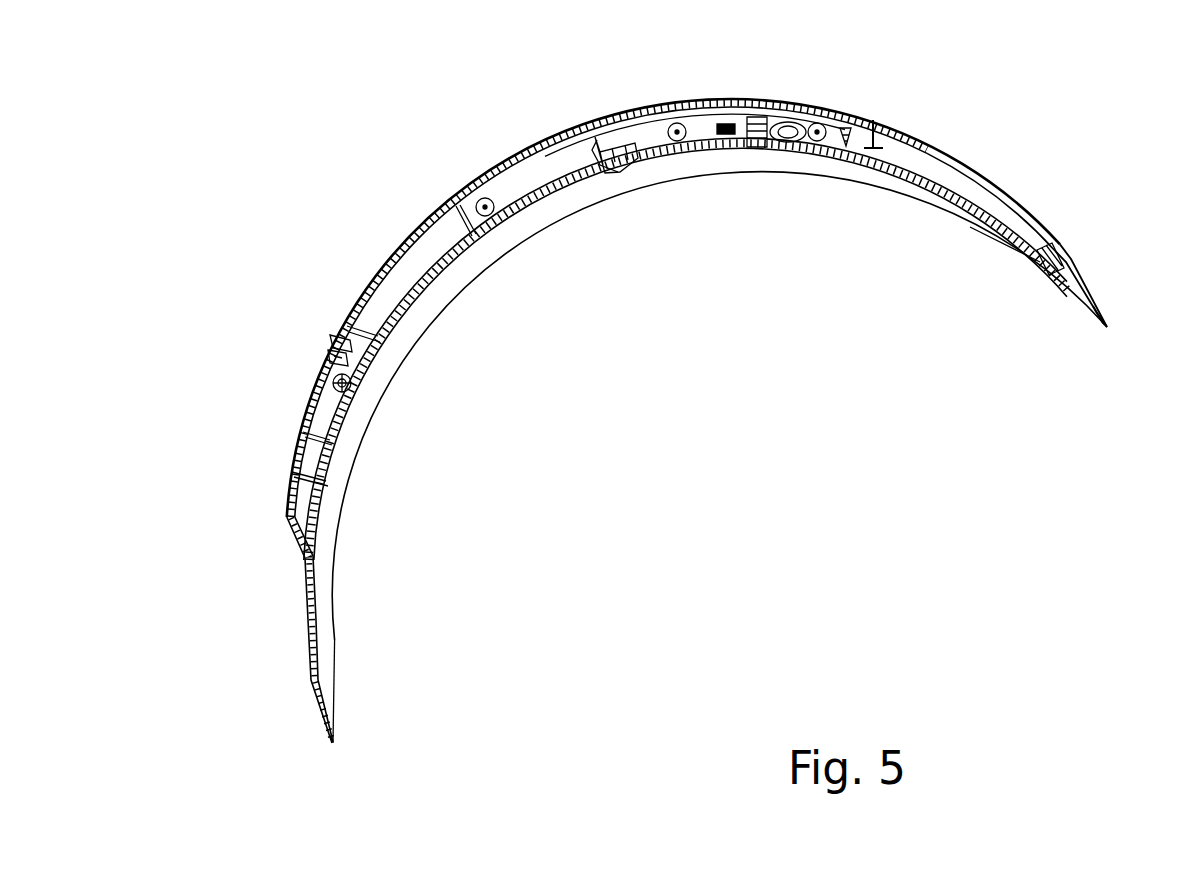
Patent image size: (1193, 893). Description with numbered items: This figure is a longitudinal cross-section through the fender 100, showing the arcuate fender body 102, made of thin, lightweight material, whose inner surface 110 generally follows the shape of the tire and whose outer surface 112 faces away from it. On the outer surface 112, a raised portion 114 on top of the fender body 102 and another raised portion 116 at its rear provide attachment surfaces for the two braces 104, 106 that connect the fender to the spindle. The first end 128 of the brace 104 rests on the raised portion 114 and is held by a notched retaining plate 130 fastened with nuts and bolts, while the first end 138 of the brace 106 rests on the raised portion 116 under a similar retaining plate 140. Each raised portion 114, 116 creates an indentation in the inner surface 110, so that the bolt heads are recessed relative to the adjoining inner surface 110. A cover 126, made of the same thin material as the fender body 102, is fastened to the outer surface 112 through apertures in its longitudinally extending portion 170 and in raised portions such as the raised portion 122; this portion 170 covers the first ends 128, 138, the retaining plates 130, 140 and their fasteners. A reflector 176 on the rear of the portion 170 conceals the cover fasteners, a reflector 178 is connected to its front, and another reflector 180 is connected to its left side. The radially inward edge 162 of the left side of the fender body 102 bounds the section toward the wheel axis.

The fender 100 is at (473, 147).
The fender body 102 is at (308, 645).
The brace 104 is at (807, 110).
The brace 106 is at (327, 370).
The inner surface 110 is at (920, 203).
The outer surface 112 is at (1093, 300).
The raised portion 114 is at (753, 117).
The raised portion 116 is at (330, 419).
The raised portion 122 is at (610, 160).
The cover 126 is at (406, 250).
The first end 128 is at (790, 113).
The retaining plate 130 is at (847, 113).
The first end 138 is at (353, 395).
The retaining plate 140 is at (343, 330).
The radially inward edge 162 is at (743, 176).
The longitudinally extending portion 170 is at (620, 118).
The reflector 176 is at (290, 463).
The reflector 178 is at (1030, 208).
The reflector 180 is at (545, 167).